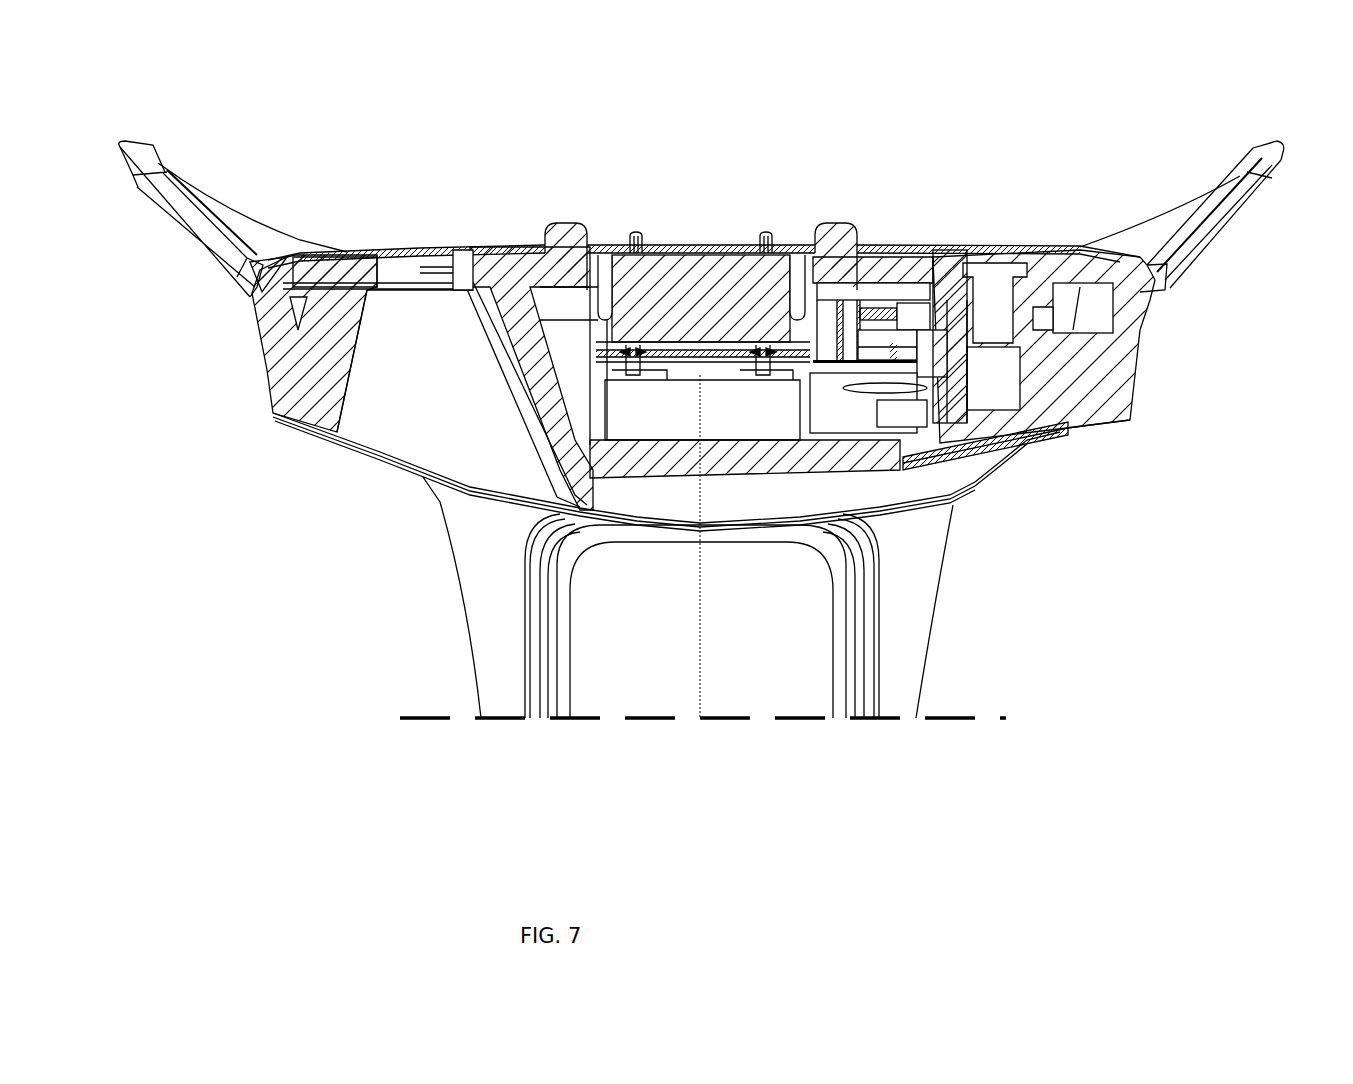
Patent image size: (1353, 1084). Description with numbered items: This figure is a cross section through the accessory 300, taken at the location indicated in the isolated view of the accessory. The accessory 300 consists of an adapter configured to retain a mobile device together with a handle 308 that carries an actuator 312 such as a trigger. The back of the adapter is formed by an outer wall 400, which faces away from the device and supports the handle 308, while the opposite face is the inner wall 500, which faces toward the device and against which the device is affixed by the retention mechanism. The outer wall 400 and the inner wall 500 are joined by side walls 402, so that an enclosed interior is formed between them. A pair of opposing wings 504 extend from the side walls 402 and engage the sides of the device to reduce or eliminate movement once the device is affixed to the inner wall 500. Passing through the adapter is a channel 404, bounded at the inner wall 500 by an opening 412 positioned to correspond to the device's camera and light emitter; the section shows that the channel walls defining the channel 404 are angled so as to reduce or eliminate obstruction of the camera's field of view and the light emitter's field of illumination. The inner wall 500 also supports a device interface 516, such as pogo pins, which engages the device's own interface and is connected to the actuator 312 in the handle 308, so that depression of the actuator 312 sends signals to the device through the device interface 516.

The accessory 300 is at (244, 673).
The handle 308 is at (920, 630).
The actuator 312 is at (791, 669).
The outer wall 400 is at (1097, 421).
The side walls 402 is at (265, 358).
The channel 404 is at (412, 410).
The opening 412 is at (400, 248).
The inner wall 500 is at (505, 245).
The wings 504 is at (155, 152).
The device interface 516 is at (843, 210).